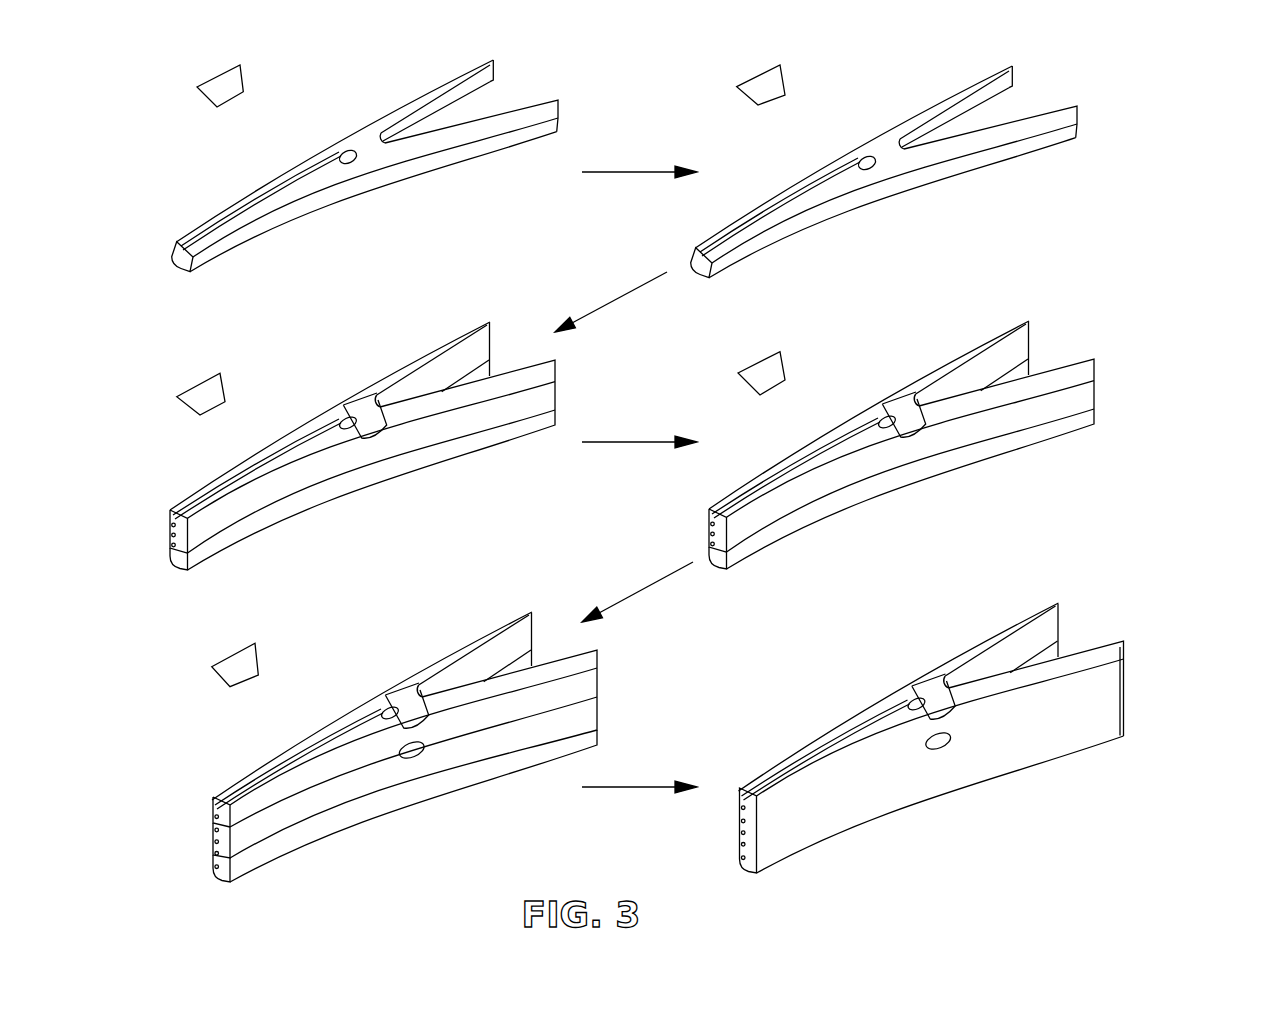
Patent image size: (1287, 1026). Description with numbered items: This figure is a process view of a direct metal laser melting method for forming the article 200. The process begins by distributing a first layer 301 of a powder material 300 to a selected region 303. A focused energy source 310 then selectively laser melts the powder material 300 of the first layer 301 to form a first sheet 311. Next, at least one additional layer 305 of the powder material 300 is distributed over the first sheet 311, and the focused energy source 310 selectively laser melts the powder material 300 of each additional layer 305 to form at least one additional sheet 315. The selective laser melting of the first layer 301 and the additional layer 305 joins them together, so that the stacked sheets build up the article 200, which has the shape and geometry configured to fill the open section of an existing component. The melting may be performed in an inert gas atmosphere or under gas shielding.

The article 200 is at (1160, 654).
The powder material 300 is at (367, 145).
The first layer 301 is at (462, 75).
The selected region 303 is at (241, 200).
The additional layer 305 is at (177, 506).
The focused energy source 310 is at (238, 82).
The first sheet 311 is at (1066, 138).
The additional sheet 315 is at (1086, 397).